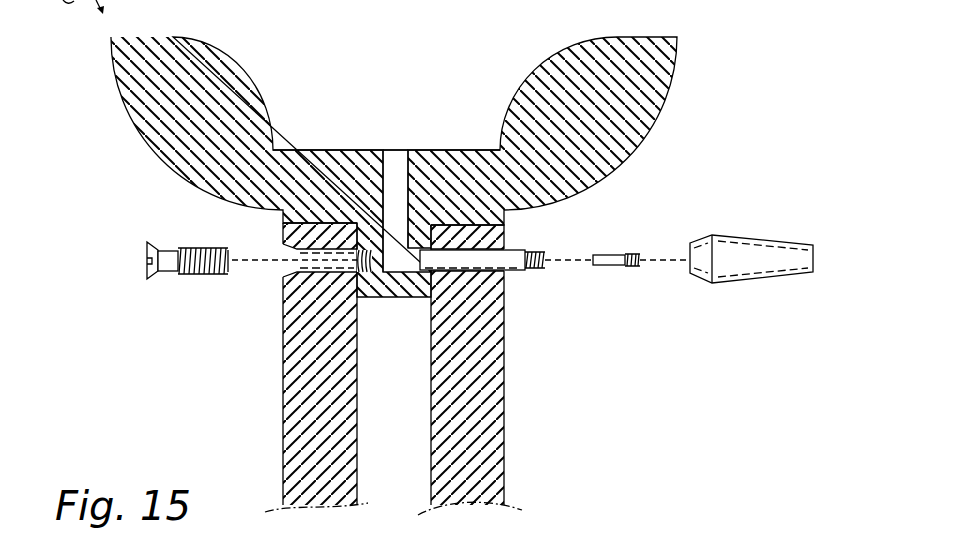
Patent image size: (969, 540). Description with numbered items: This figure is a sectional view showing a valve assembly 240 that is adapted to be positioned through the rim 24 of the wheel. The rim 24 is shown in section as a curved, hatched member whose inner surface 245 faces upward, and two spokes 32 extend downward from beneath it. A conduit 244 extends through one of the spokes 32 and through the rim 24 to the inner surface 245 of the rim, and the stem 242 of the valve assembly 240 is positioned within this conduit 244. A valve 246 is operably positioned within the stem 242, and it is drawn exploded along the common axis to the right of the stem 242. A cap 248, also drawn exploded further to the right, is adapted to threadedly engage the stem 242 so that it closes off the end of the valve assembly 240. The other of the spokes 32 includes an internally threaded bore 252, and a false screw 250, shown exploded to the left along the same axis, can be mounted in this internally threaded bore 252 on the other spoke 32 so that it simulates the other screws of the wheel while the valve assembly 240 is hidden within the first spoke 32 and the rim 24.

The rim 24 is at (182, 103).
The inner surface of the rim 245 is at (304, 126).
The conduit 244 is at (400, 160).
The valve assembly 240 is at (616, 214).
The stem 242 is at (520, 273).
The valve 246 is at (610, 252).
The cap 248 is at (752, 275).
The false screw 250 is at (184, 277).
The internally threaded bore 252 is at (307, 267).
The spokes 32 is at (292, 445).